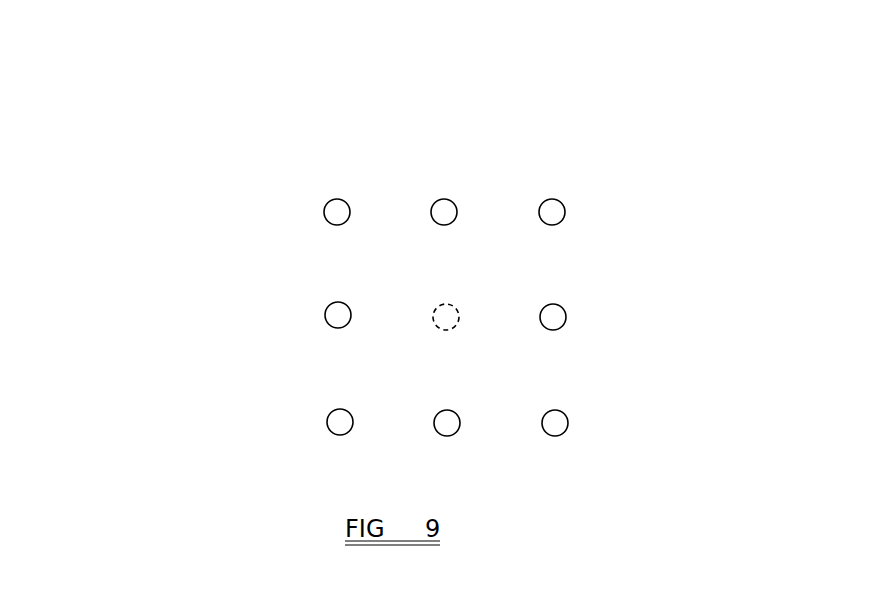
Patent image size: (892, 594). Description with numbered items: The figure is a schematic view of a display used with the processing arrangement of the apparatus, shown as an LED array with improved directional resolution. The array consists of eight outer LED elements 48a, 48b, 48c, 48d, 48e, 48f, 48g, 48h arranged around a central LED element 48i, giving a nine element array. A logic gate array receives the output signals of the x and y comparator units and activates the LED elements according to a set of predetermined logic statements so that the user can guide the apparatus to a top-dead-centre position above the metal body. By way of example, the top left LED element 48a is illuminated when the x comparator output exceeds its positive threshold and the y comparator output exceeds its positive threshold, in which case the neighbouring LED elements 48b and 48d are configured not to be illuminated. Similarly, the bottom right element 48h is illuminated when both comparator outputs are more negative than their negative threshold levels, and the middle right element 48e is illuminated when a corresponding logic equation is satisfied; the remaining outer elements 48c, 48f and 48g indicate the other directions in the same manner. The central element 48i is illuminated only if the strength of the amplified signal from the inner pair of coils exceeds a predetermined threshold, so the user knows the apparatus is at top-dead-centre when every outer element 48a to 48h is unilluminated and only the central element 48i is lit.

The top left LED element 48a is at (336, 210).
The outer LED element 48b is at (445, 209).
The outer LED element 48c is at (553, 212).
The outer LED element 48d is at (338, 315).
The middle right LED element 48e is at (553, 317).
The outer LED element 48f is at (338, 422).
The outer LED element 48g is at (450, 425).
The bottom right LED element 48h is at (553, 423).
The central LED element 48i is at (446, 315).